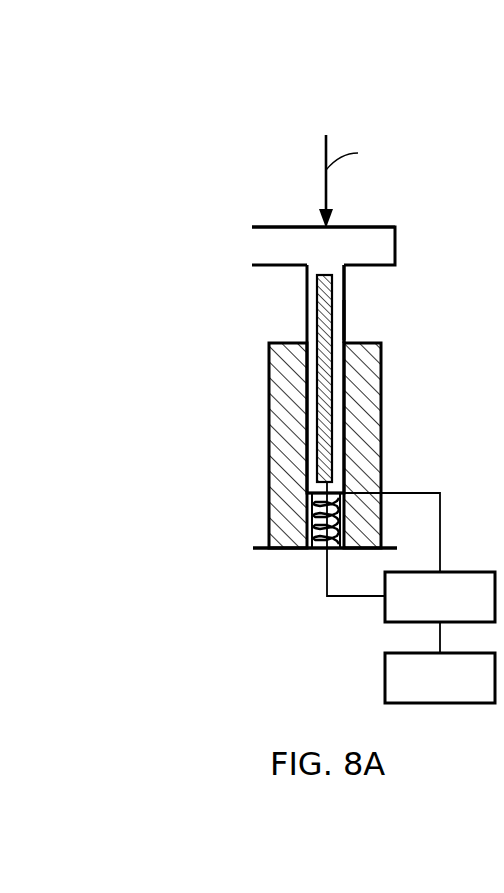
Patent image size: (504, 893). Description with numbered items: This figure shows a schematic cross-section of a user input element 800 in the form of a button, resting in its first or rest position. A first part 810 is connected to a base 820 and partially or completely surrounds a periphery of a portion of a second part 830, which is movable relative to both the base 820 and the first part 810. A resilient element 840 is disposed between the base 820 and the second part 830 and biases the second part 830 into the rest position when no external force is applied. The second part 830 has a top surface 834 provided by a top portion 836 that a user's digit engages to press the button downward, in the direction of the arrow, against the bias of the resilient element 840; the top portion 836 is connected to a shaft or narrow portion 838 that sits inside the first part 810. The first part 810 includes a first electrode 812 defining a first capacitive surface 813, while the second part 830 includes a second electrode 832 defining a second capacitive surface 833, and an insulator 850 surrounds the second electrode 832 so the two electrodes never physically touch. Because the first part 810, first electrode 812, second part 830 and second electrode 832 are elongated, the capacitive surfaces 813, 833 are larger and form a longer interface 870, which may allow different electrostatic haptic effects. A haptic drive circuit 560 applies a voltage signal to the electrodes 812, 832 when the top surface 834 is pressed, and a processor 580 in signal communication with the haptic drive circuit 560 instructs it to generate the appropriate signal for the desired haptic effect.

The user input element 800 is at (176, 112).
The second part 830 is at (233, 266).
The top surface 834 is at (305, 227).
The top portion 836 is at (375, 240).
The second electrode 832 is at (320, 316).
The second capacitive surface 833 is at (334, 303).
The shaft or narrow portion 838 is at (345, 326).
The first part 810 is at (236, 380).
The first electrode 812 is at (270, 428).
The first capacitive surface 813 is at (306, 478).
The interface 870 is at (355, 427).
The insulator 850 is at (336, 372).
The resilient element 840 is at (318, 546).
The base 820 is at (280, 549).
The haptic drive circuit 560 is at (464, 613).
The processor 580 is at (464, 694).